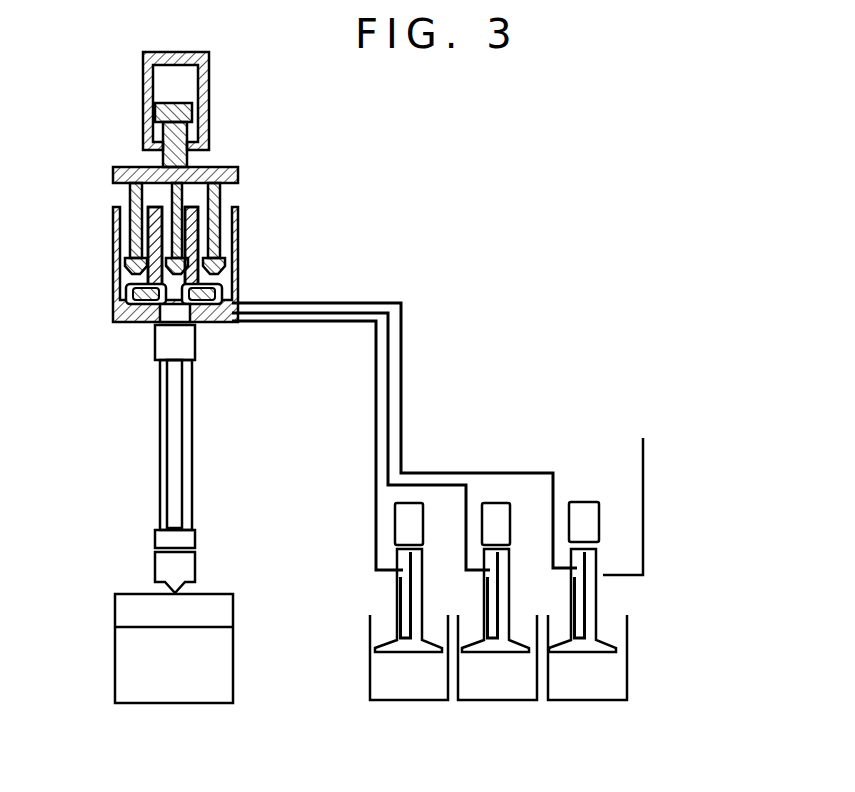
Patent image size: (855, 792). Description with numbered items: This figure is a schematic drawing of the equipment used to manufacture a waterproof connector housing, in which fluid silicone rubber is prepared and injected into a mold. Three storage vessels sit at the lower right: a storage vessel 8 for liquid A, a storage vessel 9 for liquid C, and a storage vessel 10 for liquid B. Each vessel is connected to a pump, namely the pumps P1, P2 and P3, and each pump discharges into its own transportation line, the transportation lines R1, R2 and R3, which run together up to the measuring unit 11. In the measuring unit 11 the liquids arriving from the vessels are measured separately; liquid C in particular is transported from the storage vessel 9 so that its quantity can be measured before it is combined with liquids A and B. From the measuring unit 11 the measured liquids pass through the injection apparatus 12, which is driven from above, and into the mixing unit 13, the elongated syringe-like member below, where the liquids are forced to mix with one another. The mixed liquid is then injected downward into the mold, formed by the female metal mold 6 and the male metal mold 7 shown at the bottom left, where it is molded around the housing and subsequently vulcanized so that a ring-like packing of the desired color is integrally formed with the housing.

The female metal mold 6 is at (118, 670).
The male metal mold 7 is at (123, 604).
The storage vessel for liquid A 8 is at (400, 688).
The storage vessel for liquid C 9 is at (515, 690).
The storage vessel for liquid B 10 is at (615, 683).
The measuring unit 11 is at (238, 235).
The injection apparatus 12 is at (208, 98).
The mixing unit 13 is at (192, 410).
The transportation line R1 is at (377, 335).
The transportation line R2 is at (388, 355).
The transportation line R3 is at (401, 383).
The pump P1 is at (410, 515).
The pump P2 is at (493, 515).
The pump P3 is at (592, 527).